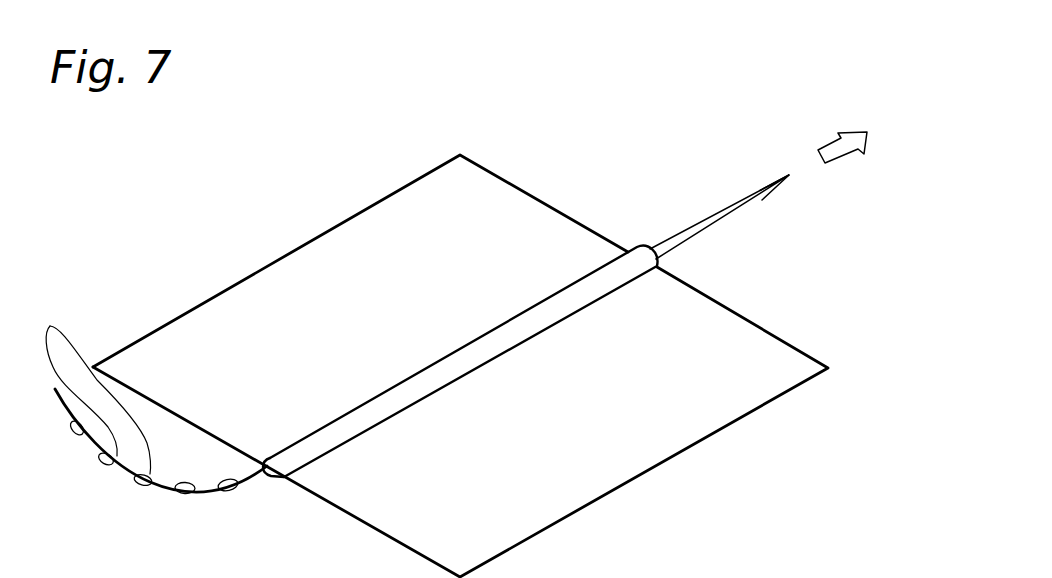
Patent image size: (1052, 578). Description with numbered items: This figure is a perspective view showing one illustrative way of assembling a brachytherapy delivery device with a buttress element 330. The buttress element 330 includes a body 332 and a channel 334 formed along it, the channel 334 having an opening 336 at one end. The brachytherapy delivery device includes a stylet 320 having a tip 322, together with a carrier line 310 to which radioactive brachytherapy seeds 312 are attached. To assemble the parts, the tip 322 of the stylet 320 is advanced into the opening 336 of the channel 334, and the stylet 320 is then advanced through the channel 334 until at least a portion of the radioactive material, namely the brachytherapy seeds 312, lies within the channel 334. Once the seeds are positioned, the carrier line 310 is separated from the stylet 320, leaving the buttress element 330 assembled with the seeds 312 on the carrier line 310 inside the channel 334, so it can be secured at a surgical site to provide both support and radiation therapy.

The carrier line 310 is at (167, 497).
The brachytherapy seeds 312 is at (50, 326).
The stylet 320 is at (725, 197).
The tip 322 is at (790, 176).
The buttress element 330 is at (252, 210).
The body 332 is at (423, 207).
The channel 334 is at (313, 432).
The opening 336 is at (277, 474).